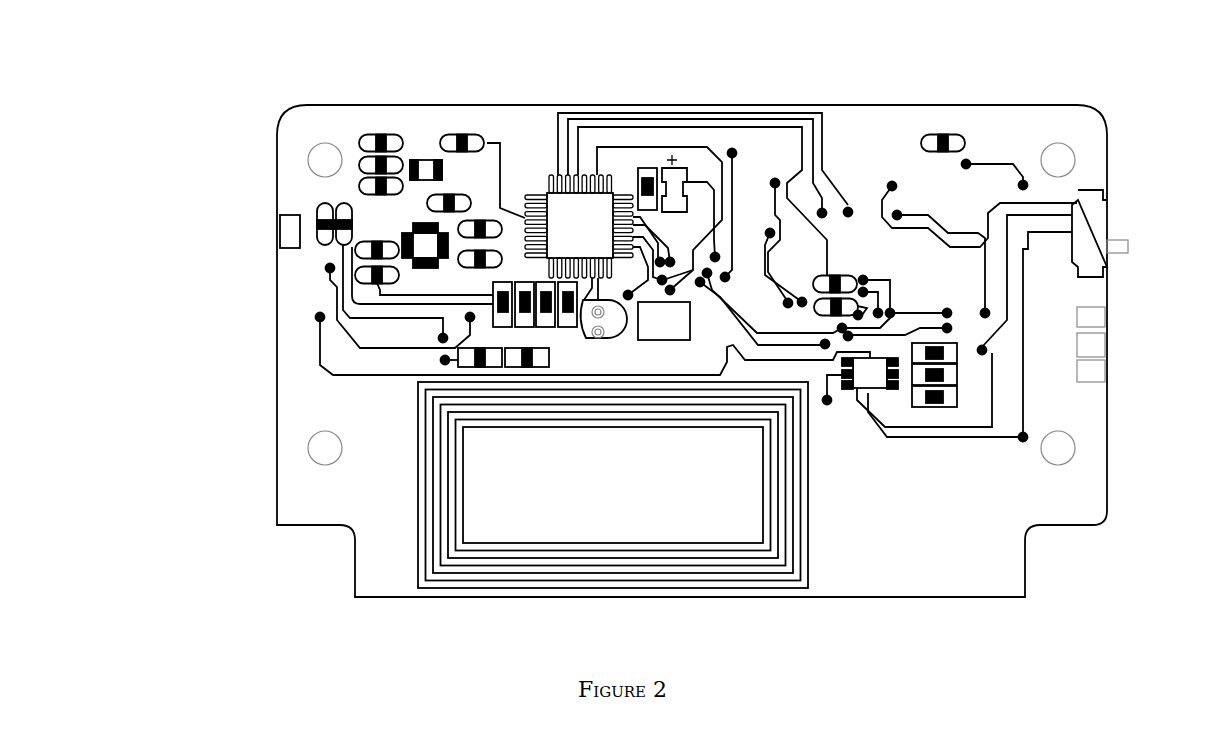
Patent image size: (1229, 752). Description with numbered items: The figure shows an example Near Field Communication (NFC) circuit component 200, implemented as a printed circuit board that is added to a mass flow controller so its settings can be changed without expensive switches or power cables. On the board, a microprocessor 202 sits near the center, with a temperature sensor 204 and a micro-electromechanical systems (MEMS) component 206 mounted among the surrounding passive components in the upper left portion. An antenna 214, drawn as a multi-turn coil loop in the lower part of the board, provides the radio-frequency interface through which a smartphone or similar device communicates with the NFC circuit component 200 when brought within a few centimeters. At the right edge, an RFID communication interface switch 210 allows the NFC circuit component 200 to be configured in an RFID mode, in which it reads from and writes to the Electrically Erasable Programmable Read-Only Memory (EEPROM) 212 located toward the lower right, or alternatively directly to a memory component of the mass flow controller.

The Near Field Communication (NFC) circuit component 200 is at (222, 86).
The microprocessor 202 is at (543, 186).
The temperature sensor 204 is at (420, 150).
The micro-electromechanical systems (MEMS) component 206 is at (392, 221).
The RFID communication interface switch 210 is at (1108, 220).
The Electrically Erasable Programmable Read-Only Memory (EEPROM) 212 is at (852, 395).
The antenna 214 is at (822, 592).